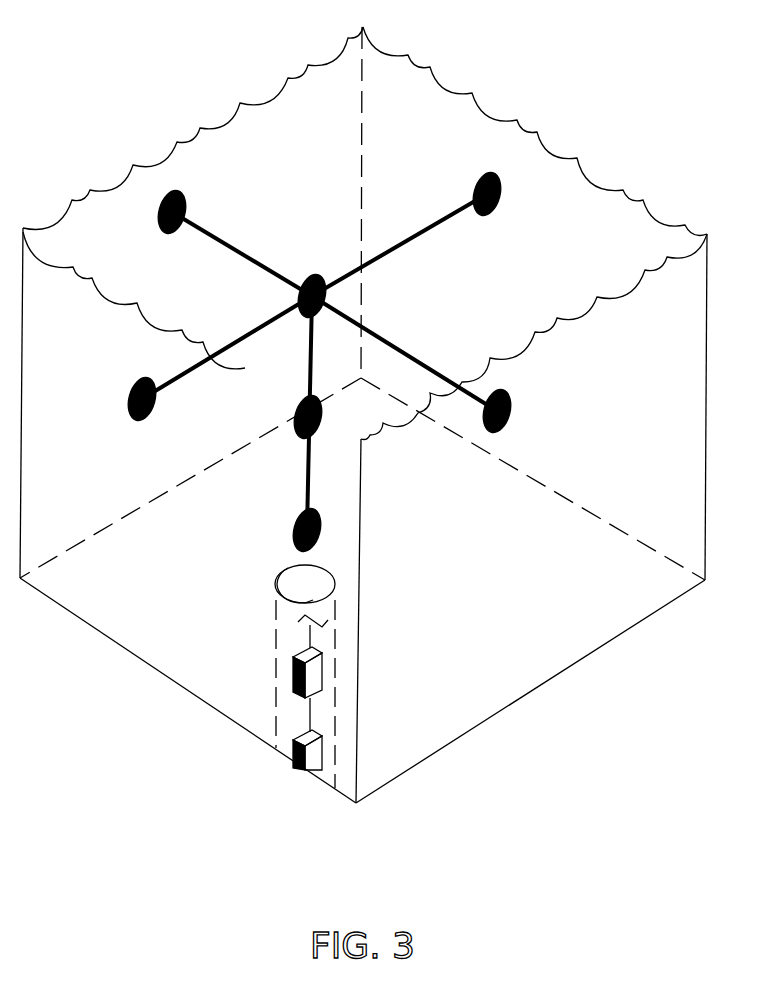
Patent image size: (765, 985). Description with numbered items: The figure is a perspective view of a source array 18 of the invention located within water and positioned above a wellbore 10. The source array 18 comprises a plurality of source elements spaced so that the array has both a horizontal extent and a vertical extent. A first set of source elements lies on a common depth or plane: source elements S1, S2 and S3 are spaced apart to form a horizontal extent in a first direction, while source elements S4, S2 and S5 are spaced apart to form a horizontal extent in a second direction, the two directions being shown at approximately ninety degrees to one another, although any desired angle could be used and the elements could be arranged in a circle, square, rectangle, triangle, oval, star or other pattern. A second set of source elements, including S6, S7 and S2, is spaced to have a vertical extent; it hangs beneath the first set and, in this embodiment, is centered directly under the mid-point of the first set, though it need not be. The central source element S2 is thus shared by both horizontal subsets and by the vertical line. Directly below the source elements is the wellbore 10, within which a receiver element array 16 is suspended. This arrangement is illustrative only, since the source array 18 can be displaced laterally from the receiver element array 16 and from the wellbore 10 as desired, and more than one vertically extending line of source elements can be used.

The source array 18 is at (583, 126).
The source element S1 is at (177, 192).
The source element S2 is at (304, 285).
The source element S3 is at (512, 402).
The source element S4 is at (128, 393).
The source element S5 is at (498, 173).
The source element S6 is at (302, 397).
The source element S7 is at (298, 523).
The wellbore 10 is at (300, 601).
The receiver element array 16 is at (297, 700).